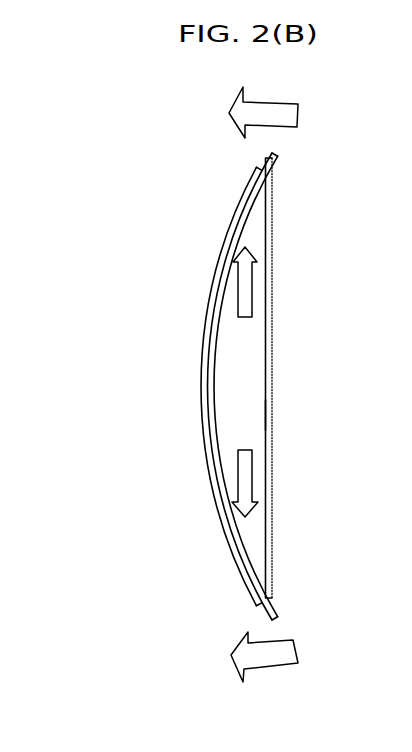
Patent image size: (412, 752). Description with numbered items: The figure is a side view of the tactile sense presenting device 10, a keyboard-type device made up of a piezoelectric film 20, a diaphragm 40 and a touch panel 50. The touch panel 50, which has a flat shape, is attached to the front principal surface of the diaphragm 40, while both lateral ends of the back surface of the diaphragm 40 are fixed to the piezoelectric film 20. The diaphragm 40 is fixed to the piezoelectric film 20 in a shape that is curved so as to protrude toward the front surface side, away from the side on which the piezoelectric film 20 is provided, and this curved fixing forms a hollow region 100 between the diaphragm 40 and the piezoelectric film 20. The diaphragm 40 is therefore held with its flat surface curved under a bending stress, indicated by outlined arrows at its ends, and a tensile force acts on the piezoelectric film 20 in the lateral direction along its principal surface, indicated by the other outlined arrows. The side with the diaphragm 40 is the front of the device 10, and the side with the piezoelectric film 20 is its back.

The tactile sense presenting device 10 is at (340, 127).
The piezoelectric film 20 is at (282, 155).
The diaphragm 40 is at (262, 168).
The touch panel 50 is at (247, 195).
The hollow region 100 is at (252, 413).